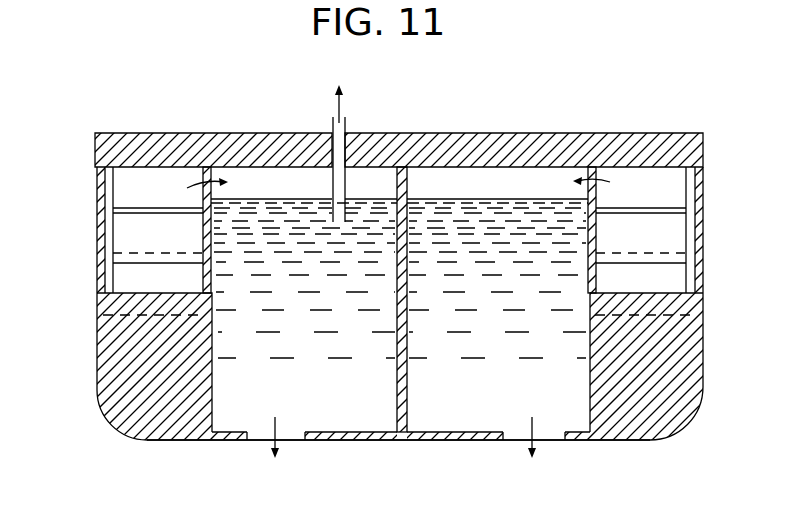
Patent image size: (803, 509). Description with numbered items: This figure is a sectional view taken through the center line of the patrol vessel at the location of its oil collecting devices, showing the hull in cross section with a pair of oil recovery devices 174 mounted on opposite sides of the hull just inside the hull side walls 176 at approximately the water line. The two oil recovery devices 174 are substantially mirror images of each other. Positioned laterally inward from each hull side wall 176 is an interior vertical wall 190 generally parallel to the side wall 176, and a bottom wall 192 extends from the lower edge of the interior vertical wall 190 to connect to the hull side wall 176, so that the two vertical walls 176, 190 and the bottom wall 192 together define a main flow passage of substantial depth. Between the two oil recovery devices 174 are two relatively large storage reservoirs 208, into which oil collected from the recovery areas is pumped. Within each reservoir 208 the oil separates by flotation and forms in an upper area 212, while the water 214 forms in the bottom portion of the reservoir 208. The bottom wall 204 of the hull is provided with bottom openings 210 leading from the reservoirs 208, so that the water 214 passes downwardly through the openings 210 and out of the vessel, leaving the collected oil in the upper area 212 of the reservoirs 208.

The oil recovery device 174 is at (153, 181).
The side wall 176 is at (97, 190).
The interior vertical wall 190 is at (203, 233).
The bottom wall 192 is at (133, 293).
The bottom wall of the hull 204 is at (348, 440).
The storage reservoir 208 is at (245, 263).
The bottom opening 210 is at (248, 438).
The upper area 212 is at (300, 200).
The water 214 is at (235, 392).